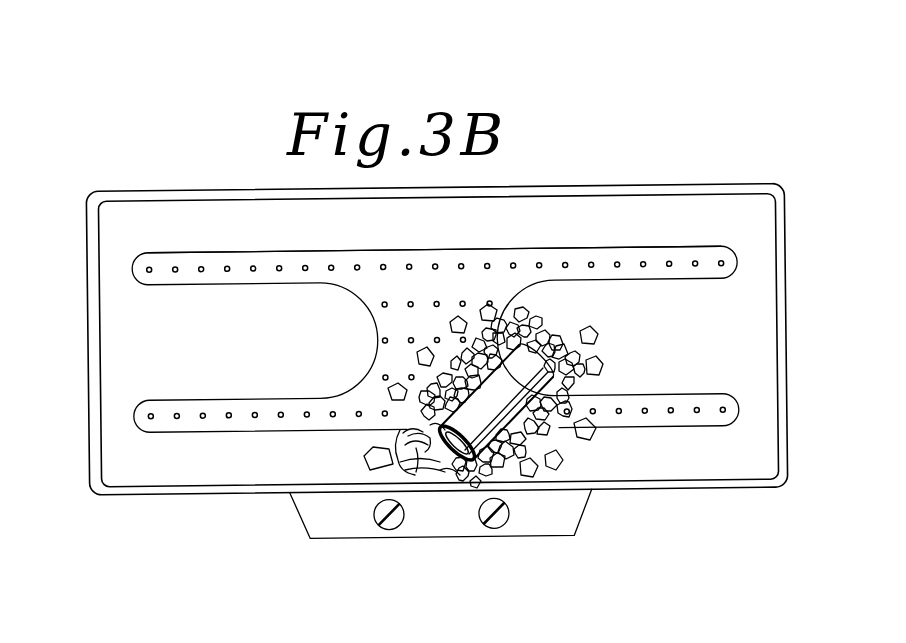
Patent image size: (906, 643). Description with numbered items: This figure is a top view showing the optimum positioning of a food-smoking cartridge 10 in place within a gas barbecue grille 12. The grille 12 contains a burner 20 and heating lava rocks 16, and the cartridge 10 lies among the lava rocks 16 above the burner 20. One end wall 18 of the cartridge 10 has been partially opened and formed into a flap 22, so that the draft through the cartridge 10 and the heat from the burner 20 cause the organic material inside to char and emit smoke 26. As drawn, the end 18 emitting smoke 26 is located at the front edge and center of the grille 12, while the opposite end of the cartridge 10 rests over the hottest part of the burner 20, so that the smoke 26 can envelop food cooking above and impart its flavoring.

The food-smoking cartridge 10 is at (548, 424).
The gas barbecue grille 12 is at (88, 339).
The lava rocks 16 is at (562, 358).
The end wall 18 is at (527, 470).
The burner 20 is at (696, 283).
The flap 22 is at (452, 470).
The smoke 26 is at (392, 474).